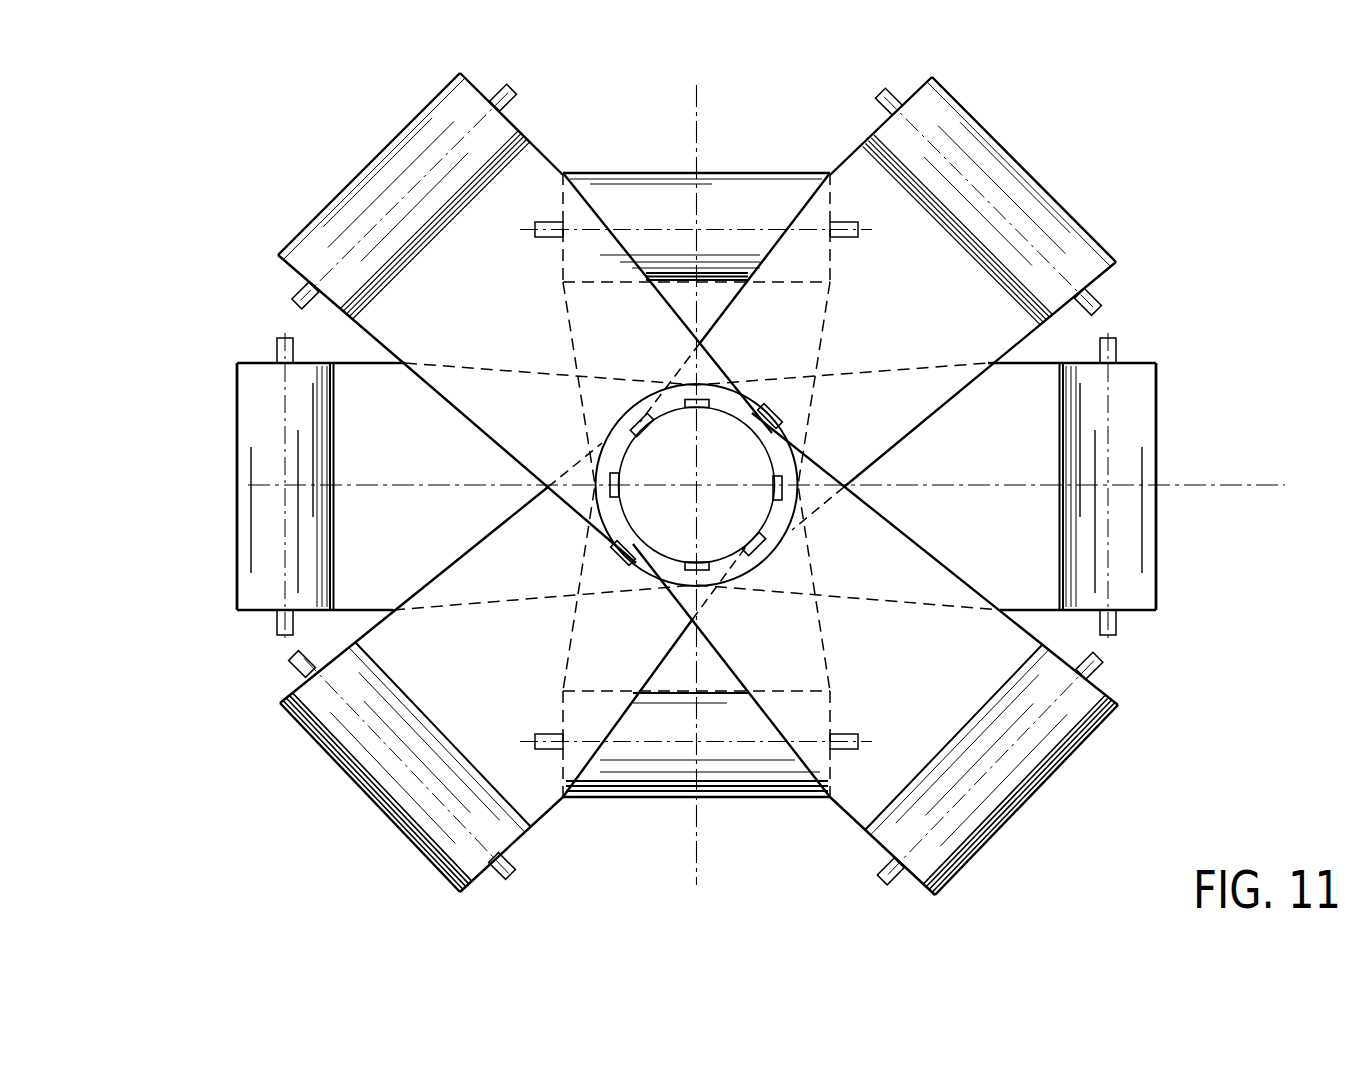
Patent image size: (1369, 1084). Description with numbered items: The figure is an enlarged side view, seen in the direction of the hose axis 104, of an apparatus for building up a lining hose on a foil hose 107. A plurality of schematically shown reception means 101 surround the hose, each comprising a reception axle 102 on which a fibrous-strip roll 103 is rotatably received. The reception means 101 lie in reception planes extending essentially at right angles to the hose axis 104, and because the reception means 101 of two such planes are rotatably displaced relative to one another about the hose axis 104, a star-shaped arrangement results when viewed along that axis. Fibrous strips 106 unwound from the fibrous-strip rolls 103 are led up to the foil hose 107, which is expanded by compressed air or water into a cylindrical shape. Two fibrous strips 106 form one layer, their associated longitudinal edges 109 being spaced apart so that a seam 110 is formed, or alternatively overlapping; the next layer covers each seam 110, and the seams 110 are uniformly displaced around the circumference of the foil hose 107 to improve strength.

The reception means 101 is at (700, 483).
The reception axle 102 is at (521, 98).
The fibrous-strip roll 103 is at (440, 135).
The hose axis 104 is at (700, 483).
The fibrous strip 106 is at (525, 178).
The foil hose 107 is at (620, 483).
The longitudinal edge 109 is at (760, 400).
The seam 110 is at (795, 392).